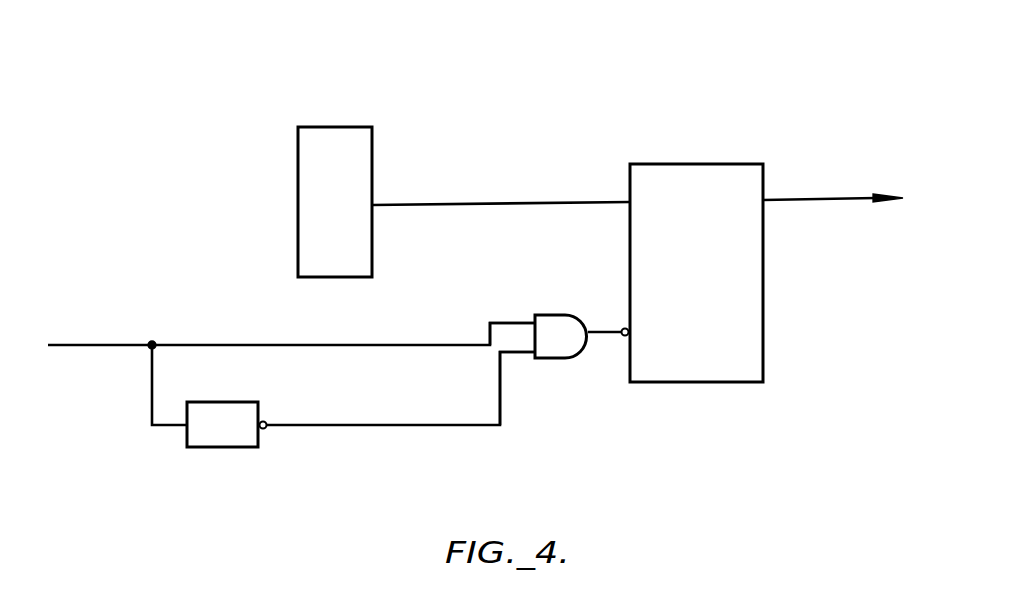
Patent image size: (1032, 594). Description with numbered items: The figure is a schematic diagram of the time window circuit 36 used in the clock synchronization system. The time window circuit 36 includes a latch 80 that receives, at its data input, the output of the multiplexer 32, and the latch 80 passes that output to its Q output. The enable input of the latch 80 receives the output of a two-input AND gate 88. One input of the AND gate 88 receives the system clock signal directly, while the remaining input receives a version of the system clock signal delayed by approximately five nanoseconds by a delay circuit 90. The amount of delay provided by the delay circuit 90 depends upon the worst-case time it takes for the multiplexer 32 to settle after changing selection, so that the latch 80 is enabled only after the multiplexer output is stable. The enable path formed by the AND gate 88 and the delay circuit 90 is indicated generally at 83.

The time window circuit 36 is at (796, 60).
The multiplexer 32 is at (352, 127).
The latch 80 is at (765, 284).
The AND gate 88 is at (572, 314).
The enable pulse generator 83 is at (472, 302).
The delay circuit 90 is at (213, 401).